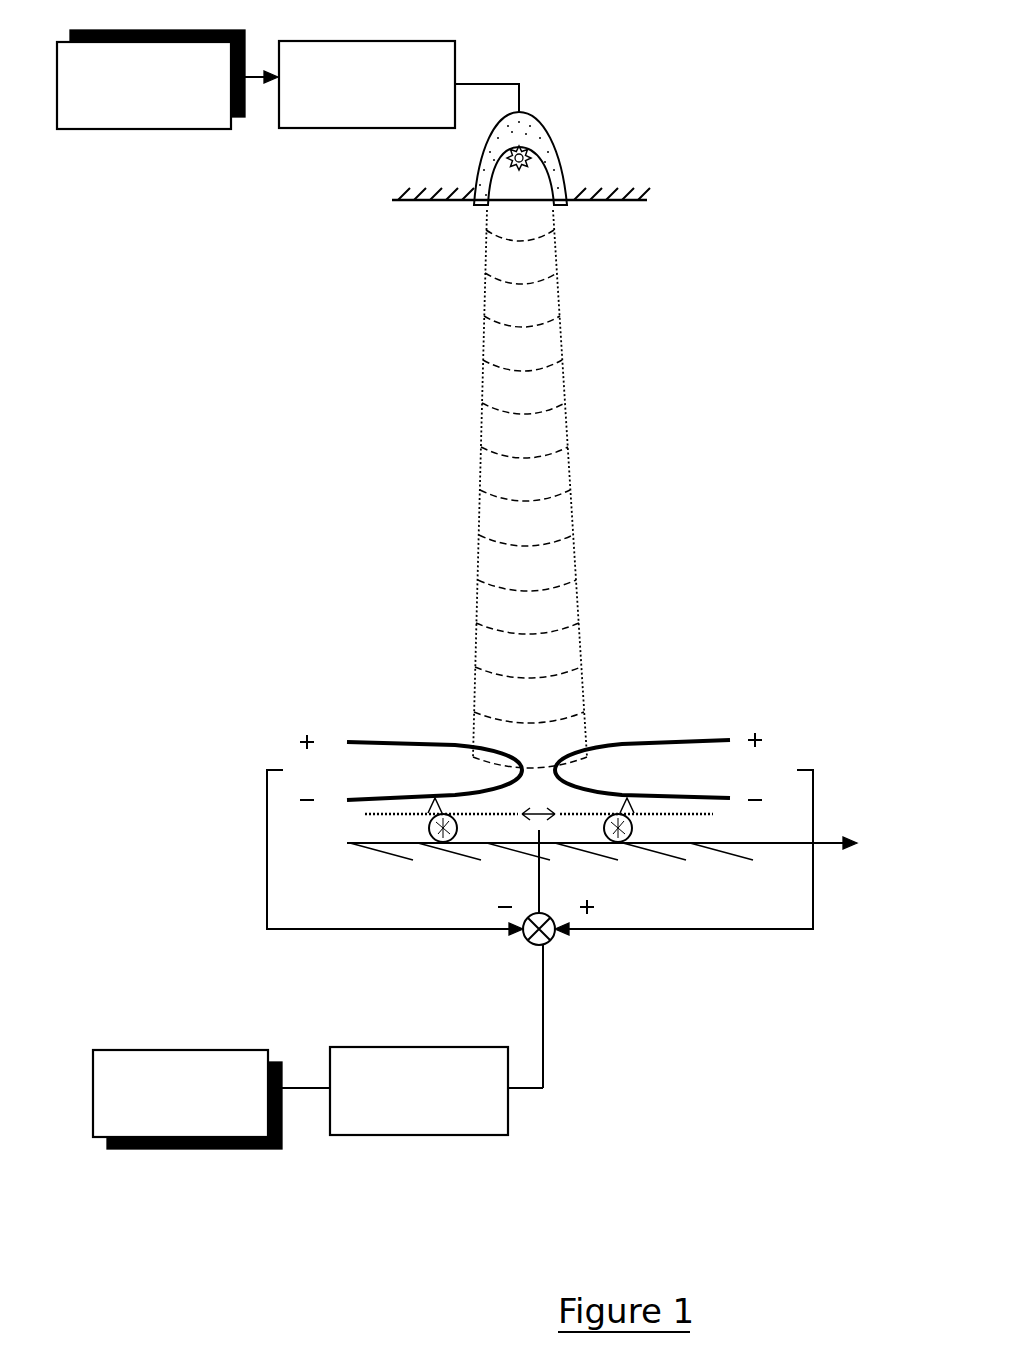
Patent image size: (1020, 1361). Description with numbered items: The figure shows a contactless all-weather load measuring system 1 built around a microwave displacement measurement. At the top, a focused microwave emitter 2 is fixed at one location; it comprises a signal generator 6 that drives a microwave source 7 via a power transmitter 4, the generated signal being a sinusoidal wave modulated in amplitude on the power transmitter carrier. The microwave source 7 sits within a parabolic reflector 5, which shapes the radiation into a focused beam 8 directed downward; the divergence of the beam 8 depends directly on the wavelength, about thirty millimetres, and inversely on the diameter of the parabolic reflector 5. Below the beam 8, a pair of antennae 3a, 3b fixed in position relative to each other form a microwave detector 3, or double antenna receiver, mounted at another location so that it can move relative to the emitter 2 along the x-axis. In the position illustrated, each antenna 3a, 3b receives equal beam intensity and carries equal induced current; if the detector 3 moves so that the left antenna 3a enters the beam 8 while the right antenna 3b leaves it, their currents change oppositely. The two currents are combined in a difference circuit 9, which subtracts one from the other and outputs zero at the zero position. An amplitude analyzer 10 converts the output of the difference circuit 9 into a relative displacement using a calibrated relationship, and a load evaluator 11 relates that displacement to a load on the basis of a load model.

The load measuring system 1 is at (408, 457).
The focused microwave emitter 2 is at (508, 52).
The microwave detector 3 is at (268, 751).
The antenna 3a is at (373, 723).
The antenna 3b is at (662, 753).
The power transmitter 4 is at (376, 88).
The parabolic reflector 5 is at (523, 128).
The signal generator 6 is at (152, 88).
The microwave source 7 is at (528, 155).
The focused beam 8 is at (550, 518).
The difference circuit 9 is at (530, 938).
The amplitude analyzer 10 is at (442, 1098).
The load evaluator 11 is at (199, 1098).